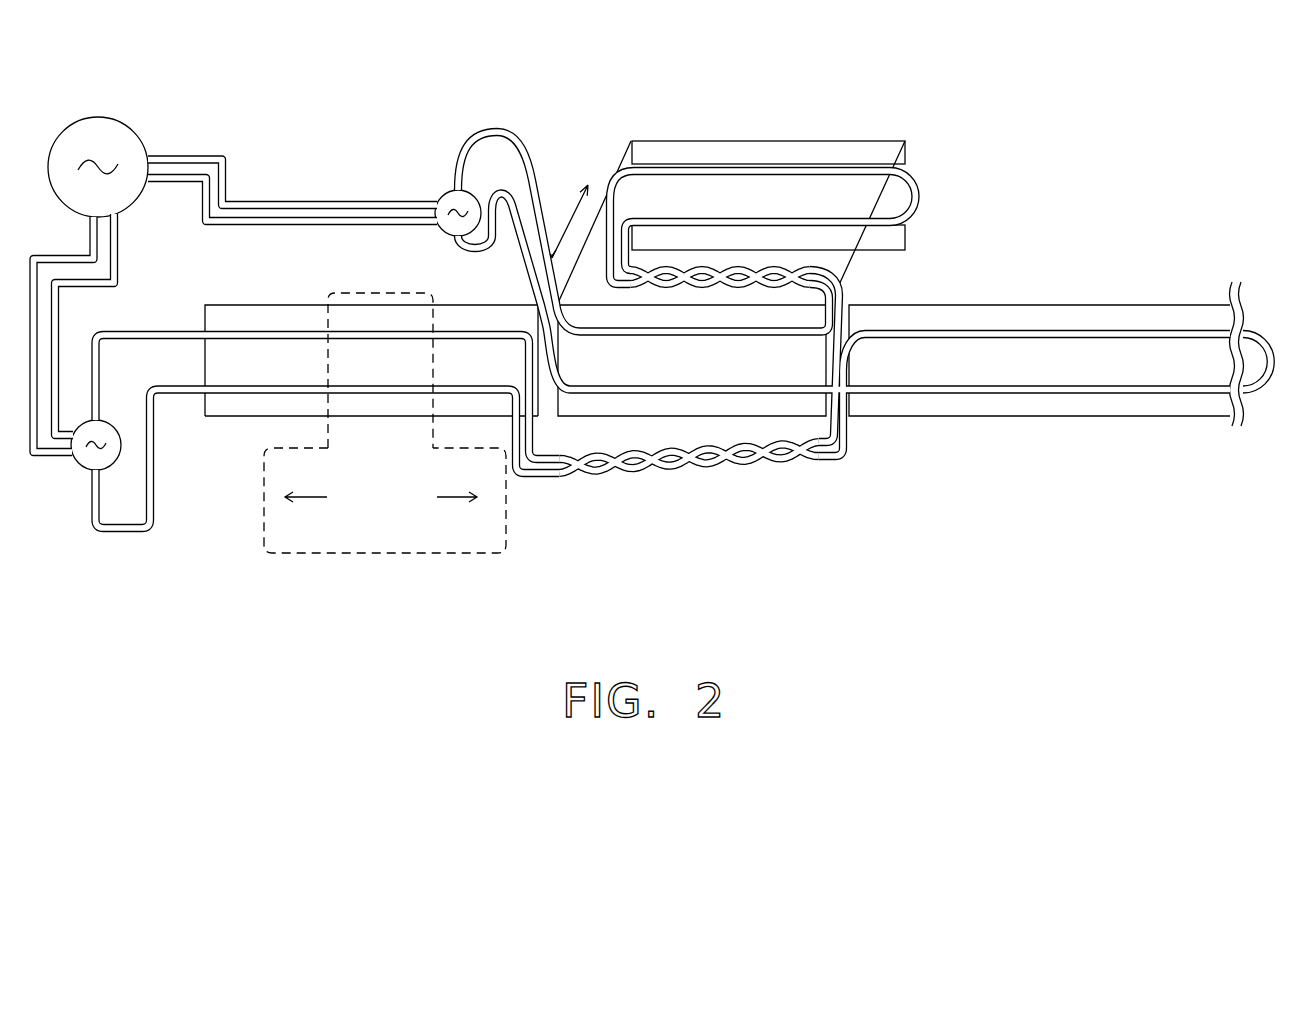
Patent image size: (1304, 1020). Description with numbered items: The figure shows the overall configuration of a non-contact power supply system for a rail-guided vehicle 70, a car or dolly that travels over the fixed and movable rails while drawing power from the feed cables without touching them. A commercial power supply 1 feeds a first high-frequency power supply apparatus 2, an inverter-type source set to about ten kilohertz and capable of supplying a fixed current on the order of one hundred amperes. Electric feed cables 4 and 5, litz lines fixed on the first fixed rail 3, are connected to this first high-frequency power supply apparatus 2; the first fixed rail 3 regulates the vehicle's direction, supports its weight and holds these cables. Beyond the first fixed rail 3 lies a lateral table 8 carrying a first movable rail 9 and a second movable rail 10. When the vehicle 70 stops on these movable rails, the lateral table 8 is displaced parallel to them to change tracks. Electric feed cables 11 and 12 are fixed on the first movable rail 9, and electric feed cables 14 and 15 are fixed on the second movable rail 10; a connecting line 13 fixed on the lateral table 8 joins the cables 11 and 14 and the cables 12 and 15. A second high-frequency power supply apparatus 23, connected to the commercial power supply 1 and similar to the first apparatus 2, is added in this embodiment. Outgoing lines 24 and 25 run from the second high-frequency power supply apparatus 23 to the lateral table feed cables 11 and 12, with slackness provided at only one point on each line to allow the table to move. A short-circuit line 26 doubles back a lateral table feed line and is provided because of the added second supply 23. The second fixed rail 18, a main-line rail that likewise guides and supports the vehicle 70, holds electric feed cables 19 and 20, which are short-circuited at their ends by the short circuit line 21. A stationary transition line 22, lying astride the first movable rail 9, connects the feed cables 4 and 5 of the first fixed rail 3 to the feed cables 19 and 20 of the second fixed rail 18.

The commercial power supply 1 is at (108, 118).
The first high-frequency power supply apparatus 2 is at (74, 462).
The first fixed rail 3 is at (243, 303).
The electric feed cable 4 is at (322, 328).
The electric feed cable 5 is at (230, 418).
The lateral table 8 is at (626, 152).
The first movable rail 9 is at (584, 418).
The second movable rail 10 is at (906, 247).
The electric feed cable 11 is at (762, 338).
The electric feed cable 12 is at (710, 393).
The connecting line 13 is at (845, 266).
The electric feed cable 14 is at (746, 163).
The electric feed cable 15 is at (803, 218).
The second fixed rail 18 is at (1034, 305).
The electric feed cable 19 is at (1148, 330).
The electric feed cable 20 is at (1135, 393).
The short circuit line 21 is at (1258, 330).
The transition line 22 is at (622, 478).
The second high-frequency power supply apparatus 23 is at (446, 193).
The outgoing line 24 is at (517, 135).
The outgoing line 25 is at (470, 258).
The short-circuit line 26 is at (921, 190).
The rail-guided vehicle 70 is at (346, 545).